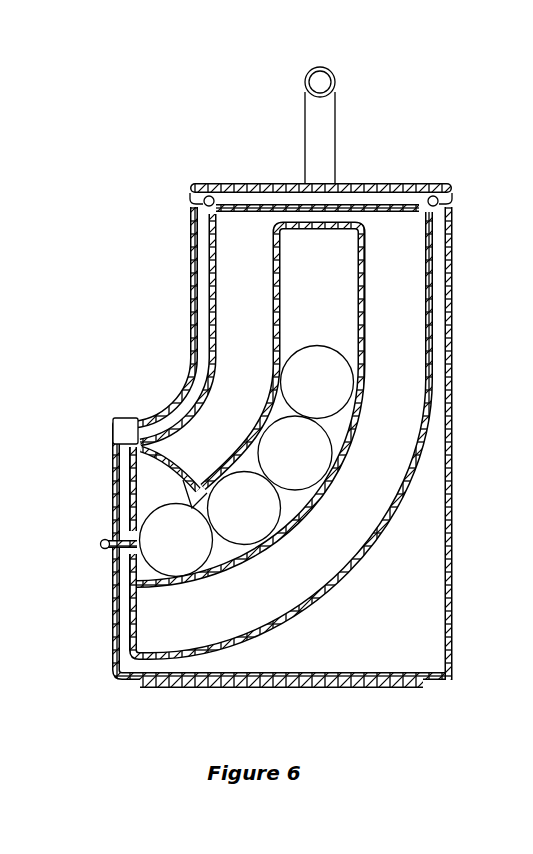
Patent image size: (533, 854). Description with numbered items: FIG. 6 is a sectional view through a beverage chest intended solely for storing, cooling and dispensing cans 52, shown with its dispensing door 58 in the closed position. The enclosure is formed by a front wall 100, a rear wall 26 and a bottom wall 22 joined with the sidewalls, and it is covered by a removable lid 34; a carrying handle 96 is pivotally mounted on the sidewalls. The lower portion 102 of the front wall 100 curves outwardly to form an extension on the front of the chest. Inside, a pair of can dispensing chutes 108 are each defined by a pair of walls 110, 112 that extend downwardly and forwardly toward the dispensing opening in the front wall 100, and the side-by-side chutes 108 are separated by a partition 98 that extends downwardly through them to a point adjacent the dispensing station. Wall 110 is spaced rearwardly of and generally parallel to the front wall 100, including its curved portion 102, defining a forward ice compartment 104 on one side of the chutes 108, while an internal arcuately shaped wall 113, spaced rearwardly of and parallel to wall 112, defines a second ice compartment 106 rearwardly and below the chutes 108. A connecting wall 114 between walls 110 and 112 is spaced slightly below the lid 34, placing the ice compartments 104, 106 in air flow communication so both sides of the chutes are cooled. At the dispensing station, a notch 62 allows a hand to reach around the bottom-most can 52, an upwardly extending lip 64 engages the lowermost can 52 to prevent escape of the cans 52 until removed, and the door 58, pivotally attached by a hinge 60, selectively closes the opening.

The bottom wall 22 is at (292, 680).
The rear wall 26 is at (452, 443).
The removable lid 34 is at (208, 182).
The cans 52 is at (222, 521).
The dispensing door 58 is at (113, 488).
The hinge 60 is at (100, 544).
The notch 62 is at (158, 483).
The upwardly extending lip 64 is at (138, 555).
The carrying handle 96 is at (319, 67).
The partition 98 is at (296, 266).
The front wall 100 is at (188, 236).
The lower portion of front wall 102 is at (172, 402).
The forward ice compartment 104 is at (243, 252).
The second ice compartment 106 is at (402, 243).
The can dispensing chutes 108 is at (325, 288).
The chute wall 110 is at (273, 308).
The chute wall 112 is at (363, 328).
The arcuately shaped wall 113 is at (335, 582).
The connecting wall 114 is at (340, 222).